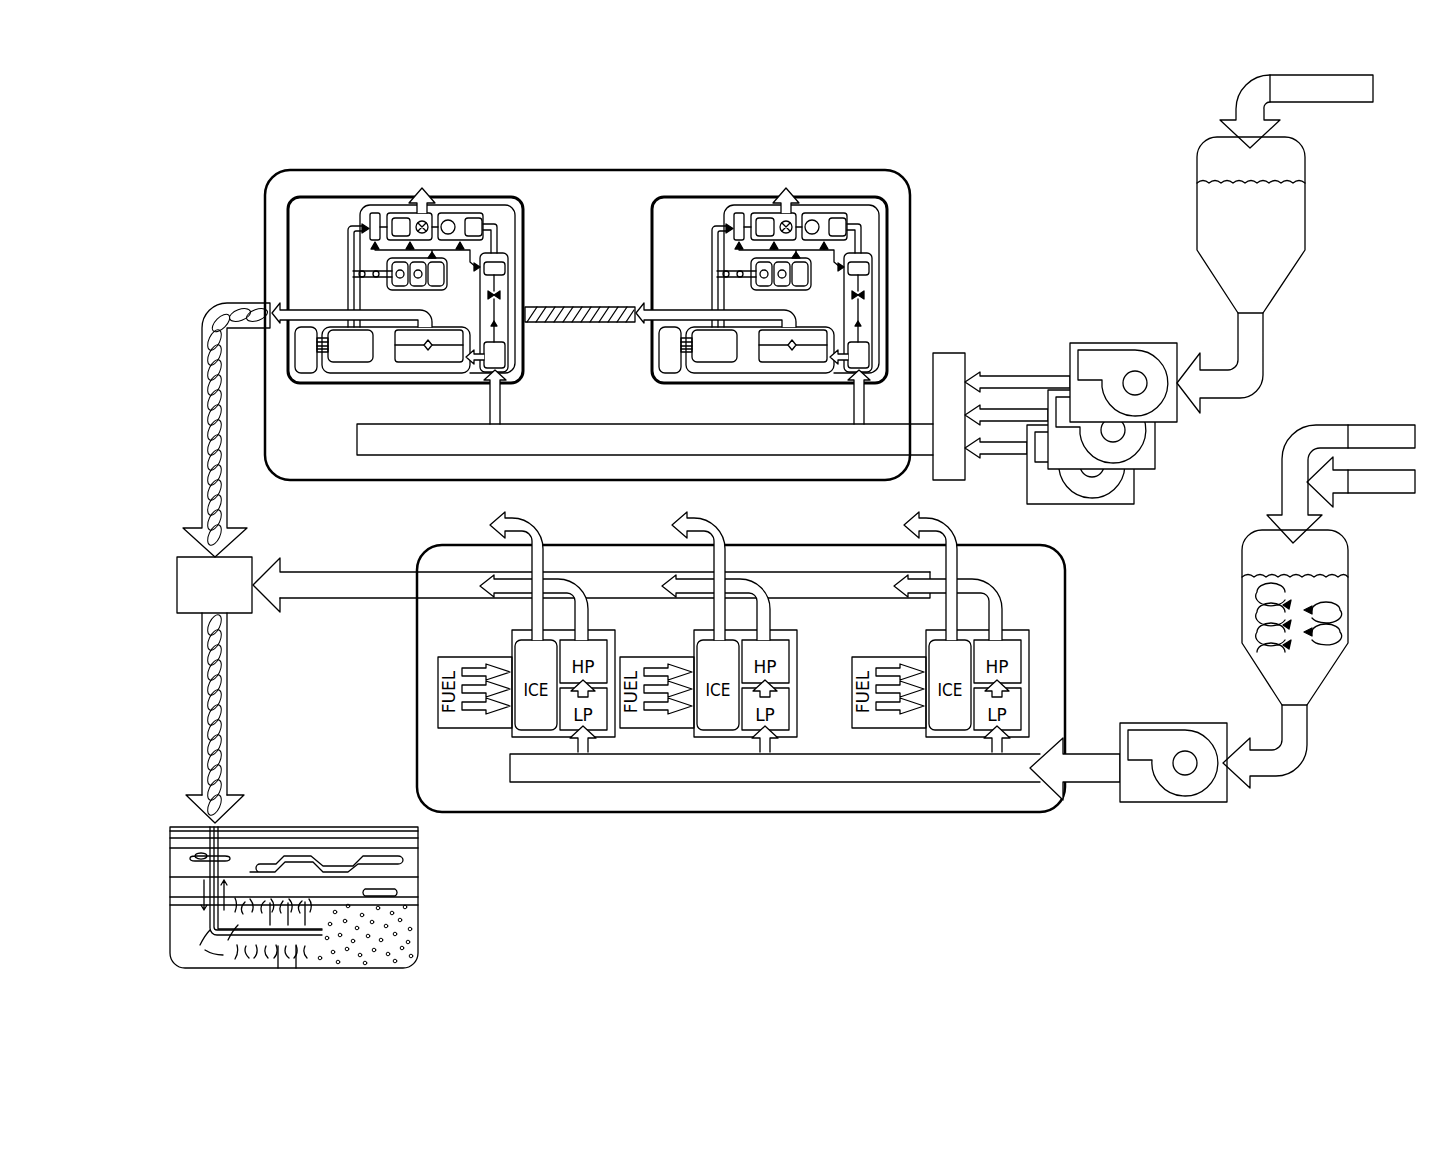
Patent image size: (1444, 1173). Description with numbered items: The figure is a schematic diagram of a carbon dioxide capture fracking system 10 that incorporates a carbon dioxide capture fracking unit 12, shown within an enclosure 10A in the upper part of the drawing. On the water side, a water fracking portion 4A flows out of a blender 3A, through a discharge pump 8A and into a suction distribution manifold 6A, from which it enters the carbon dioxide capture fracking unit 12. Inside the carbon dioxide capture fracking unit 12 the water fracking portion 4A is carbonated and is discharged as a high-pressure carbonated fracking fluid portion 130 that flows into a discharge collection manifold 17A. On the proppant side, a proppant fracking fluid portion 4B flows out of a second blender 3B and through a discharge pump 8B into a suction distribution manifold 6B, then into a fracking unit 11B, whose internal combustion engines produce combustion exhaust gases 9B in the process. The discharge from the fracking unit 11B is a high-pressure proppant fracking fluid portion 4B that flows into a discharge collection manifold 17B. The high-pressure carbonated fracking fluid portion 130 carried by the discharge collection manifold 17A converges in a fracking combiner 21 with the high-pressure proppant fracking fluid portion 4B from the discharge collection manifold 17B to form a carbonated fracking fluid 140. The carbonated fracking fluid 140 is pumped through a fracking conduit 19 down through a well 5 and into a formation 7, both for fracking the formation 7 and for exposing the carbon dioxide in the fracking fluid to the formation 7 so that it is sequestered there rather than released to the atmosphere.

The carbon dioxide capture fracking system 10 is at (228, 105).
The first pumping unit enclosure 10A is at (586, 170).
The carbon dioxide capture fracking unit 12 is at (861, 197).
The high-pressure carbonated fracking fluid portion 130 is at (201, 360).
The discharge collection manifold 17A is at (578, 325).
The suction distribution manifold 6A is at (357, 442).
The discharge pump 8A is at (1112, 492).
The blender 3A is at (1306, 170).
The water fracking portion 4A is at (1252, 243).
The fracking combiner 21 is at (177, 590).
The proppant fracking fluid portion 4B is at (322, 583).
The discharge collection manifold 17B is at (345, 603).
The fracking unit 11B is at (1028, 648).
The suction distribution manifold 6B is at (510, 768).
The combustion exhaust gas 9B is at (912, 518).
The discharge pump 8B is at (1172, 802).
The blender 3B is at (1350, 563).
The carbonated fracking fluid 140 is at (205, 668).
The fracking conduit 19 is at (202, 745).
The well 5 is at (205, 873).
The formation 7 is at (195, 945).